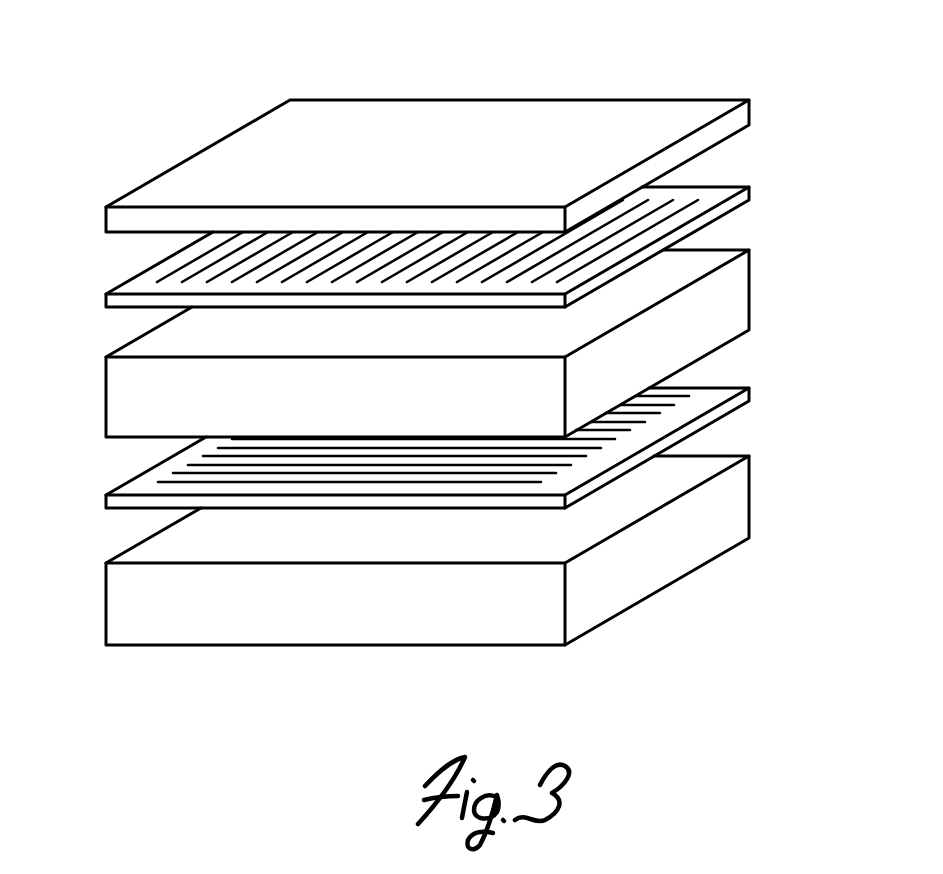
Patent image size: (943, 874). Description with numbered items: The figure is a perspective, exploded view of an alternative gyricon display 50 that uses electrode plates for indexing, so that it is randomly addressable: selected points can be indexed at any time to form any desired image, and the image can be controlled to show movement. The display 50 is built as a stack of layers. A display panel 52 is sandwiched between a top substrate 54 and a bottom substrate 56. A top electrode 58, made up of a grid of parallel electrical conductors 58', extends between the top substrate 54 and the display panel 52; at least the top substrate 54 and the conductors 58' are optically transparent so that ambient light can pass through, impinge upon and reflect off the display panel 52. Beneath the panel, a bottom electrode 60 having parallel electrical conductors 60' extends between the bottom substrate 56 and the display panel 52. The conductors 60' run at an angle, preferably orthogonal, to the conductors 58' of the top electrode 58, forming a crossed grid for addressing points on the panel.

The gyricon display 50 is at (626, 84).
The top substrate 54 is at (702, 112).
The top electrode 58 is at (475, 237).
The parallel electrical conductors 58' is at (360, 245).
The display panel 52 is at (738, 302).
The bottom electrode 60 is at (469, 425).
The parallel electrical conductors 60' is at (359, 447).
The bottom substrate 56 is at (740, 517).